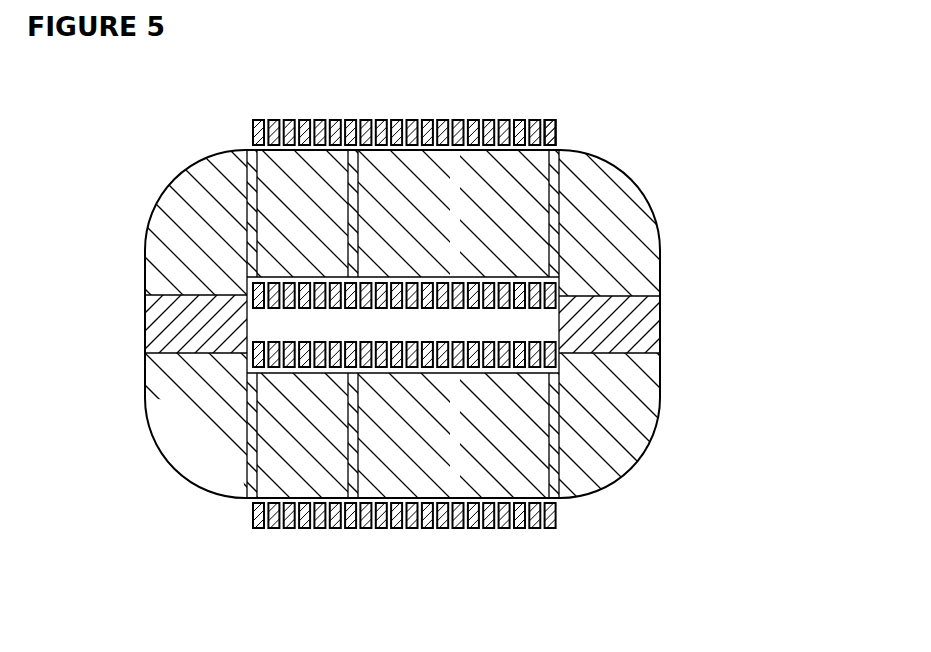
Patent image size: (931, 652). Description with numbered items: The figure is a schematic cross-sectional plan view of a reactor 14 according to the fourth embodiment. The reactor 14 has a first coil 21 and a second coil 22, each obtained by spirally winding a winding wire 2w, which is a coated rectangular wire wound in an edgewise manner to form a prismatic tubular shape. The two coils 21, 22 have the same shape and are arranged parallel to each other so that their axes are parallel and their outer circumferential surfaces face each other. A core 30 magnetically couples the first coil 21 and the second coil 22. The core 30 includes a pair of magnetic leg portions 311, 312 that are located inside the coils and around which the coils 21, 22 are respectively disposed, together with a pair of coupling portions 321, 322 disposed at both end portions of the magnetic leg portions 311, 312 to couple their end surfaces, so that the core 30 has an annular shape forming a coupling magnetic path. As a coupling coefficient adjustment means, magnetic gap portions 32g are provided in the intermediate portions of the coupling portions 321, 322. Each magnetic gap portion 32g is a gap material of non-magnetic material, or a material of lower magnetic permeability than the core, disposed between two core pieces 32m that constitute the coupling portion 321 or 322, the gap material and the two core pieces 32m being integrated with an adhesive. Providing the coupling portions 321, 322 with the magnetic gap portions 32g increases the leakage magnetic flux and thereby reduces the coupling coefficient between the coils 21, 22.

The reactor 14 is at (673, 93).
The first coil 21 is at (562, 113).
The second coil 22 is at (389, 535).
The winding wire 2w is at (557, 131).
The core 30 is at (465, 326).
The magnetic leg portion 311 is at (245, 141).
The magnetic leg portion 312 is at (567, 501).
The coupling portion 321 is at (465, 326).
The coupling portion 322 is at (663, 213).
The core piece 32m is at (145, 237).
The magnetic gap portion 32g is at (145, 327).